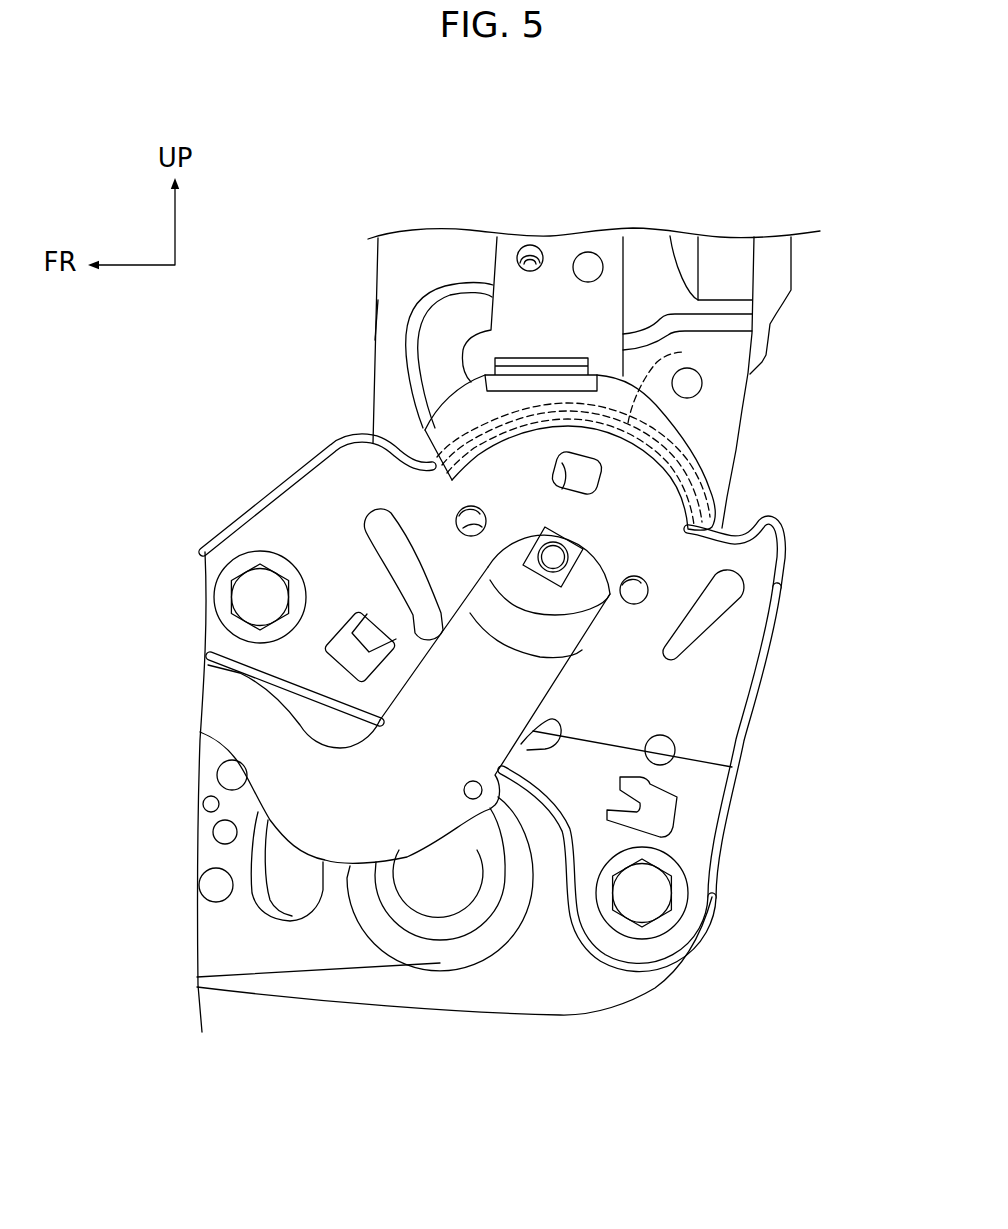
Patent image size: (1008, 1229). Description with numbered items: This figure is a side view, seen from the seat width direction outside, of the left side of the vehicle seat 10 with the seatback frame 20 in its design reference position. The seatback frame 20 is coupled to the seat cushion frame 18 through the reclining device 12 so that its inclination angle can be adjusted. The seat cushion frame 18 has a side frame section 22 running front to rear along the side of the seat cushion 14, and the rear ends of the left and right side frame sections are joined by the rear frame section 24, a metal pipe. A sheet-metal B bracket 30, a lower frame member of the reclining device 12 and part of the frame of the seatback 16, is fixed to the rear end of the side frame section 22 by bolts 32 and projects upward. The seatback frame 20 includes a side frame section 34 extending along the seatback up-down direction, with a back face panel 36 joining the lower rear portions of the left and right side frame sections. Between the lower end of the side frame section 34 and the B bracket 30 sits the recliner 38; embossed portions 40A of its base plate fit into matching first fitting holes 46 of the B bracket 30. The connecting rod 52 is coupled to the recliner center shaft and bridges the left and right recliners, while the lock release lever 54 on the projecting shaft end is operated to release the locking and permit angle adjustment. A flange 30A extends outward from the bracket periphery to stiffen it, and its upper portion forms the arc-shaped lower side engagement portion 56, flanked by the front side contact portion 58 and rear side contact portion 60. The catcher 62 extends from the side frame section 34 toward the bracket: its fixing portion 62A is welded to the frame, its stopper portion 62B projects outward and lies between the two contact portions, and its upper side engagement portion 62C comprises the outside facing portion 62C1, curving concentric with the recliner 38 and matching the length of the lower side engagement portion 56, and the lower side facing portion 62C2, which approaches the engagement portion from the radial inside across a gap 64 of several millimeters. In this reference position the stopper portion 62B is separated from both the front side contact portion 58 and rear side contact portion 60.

The vehicle seat 10 is at (503, 153).
The reclining device 12 is at (510, 341).
The seat cushion 14 is at (318, 970).
The seatback 16 is at (375, 340).
The seat cushion frame 18 is at (454, 832).
The seatback frame 20 is at (523, 335).
The side frame section 22 is at (483, 1014).
The rear frame section 24 is at (363, 757).
The B bracket 30 is at (534, 682).
The flange 30A is at (770, 653).
The bolt 32 is at (262, 588).
The side frame section 34 is at (377, 317).
The back face panel 36 is at (791, 287).
The recliner 38 is at (683, 608).
The embossed portion 40A is at (466, 513).
The first fitting hole 46 is at (552, 470).
The connecting rod 52 is at (540, 584).
The lock release lever 54 is at (223, 706).
The lower side engagement portion 56 is at (678, 460).
The front side contact portion 58 is at (381, 436).
The rear side contact portion 60 is at (760, 530).
The catcher 62 is at (571, 341).
The fixing portion 62A is at (558, 247).
The stopper portion 62B is at (545, 385).
The upper side engagement portion 62C is at (559, 443).
The outside facing portion 62C1 is at (471, 421).
The lower side facing portion 62C2 is at (690, 483).
The gap 64 is at (697, 362).